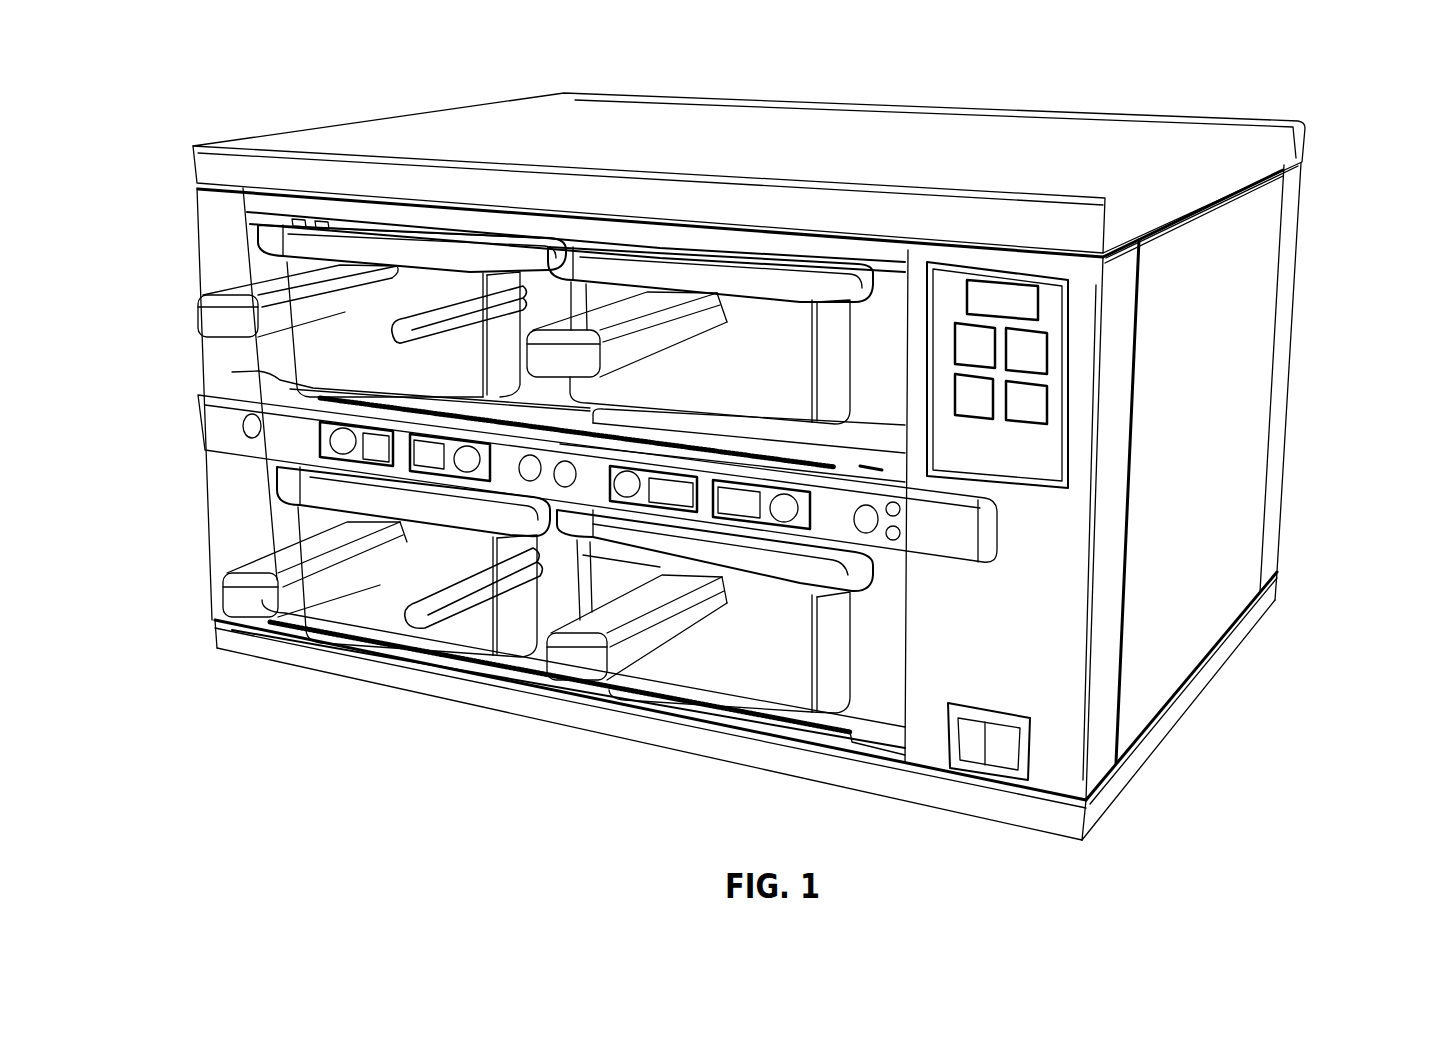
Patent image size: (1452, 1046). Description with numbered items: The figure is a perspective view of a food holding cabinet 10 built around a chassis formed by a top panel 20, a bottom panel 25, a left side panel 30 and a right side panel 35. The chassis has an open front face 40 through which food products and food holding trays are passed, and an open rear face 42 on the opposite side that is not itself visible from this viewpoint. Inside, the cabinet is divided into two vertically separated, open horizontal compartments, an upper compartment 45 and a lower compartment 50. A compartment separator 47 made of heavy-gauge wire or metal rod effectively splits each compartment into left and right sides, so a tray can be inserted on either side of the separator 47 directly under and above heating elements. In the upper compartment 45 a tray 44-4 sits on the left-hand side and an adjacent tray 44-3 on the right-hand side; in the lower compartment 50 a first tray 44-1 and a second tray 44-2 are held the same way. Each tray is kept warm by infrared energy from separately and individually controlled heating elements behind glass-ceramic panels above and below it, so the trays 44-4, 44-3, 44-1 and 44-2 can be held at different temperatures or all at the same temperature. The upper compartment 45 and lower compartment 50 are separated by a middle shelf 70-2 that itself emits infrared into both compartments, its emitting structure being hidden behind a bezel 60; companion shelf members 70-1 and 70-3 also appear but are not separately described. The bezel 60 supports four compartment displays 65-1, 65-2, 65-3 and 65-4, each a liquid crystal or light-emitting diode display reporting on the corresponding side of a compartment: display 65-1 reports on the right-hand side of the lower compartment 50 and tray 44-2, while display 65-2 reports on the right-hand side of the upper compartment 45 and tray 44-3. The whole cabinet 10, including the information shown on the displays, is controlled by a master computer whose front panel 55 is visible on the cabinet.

The cabinet 10 is at (1254, 56).
The top panel 20 is at (755, 118).
The bottom panel 25 is at (1157, 748).
The left side panel 30 is at (212, 468).
The right side panel 35 is at (1228, 434).
The open front face 40 is at (520, 770).
The open rear face 42 is at (1293, 357).
The food holding tray 44-1 is at (343, 569).
The food holding tray 44-2 is at (780, 670).
The food holding tray 44-3 is at (795, 350).
The food holding tray 44-4 is at (345, 215).
The upper compartment 45 is at (272, 345).
The compartment separator 47 is at (435, 313).
The lower compartment 50 is at (297, 528).
The front panel 55 is at (1058, 312).
The bezel 60 is at (683, 612).
The compartment display 65-1 is at (745, 527).
The compartment display 65-2 is at (668, 510).
The compartment display 65-3 is at (440, 473).
The compartment display 65-4 is at (345, 468).
The rail 70-1 is at (260, 253).
The shelf 70-2 is at (267, 370).
The rail 70-3 is at (850, 733).